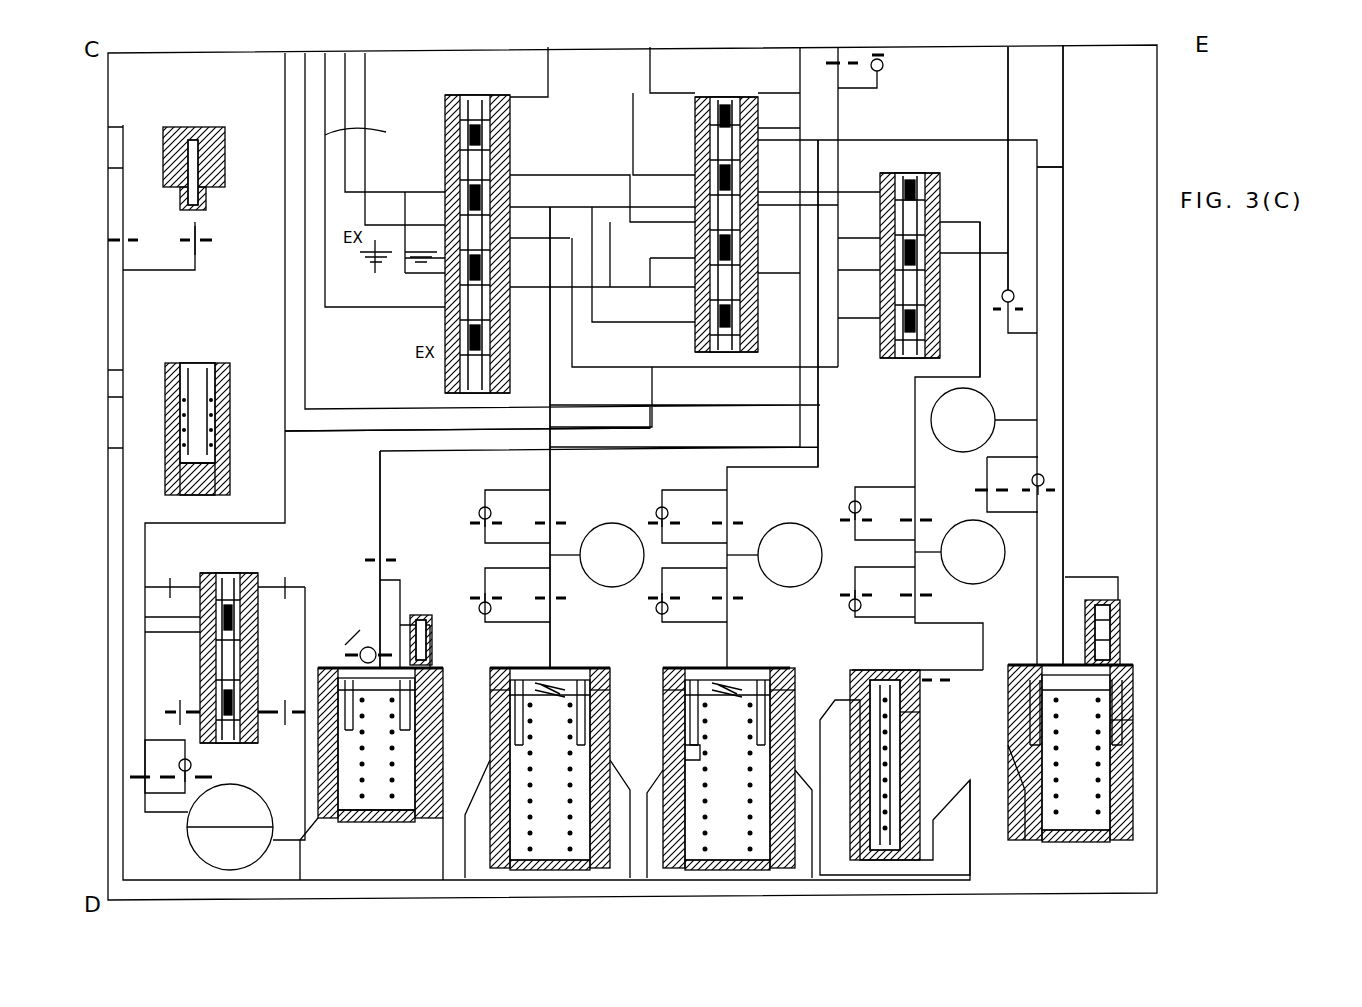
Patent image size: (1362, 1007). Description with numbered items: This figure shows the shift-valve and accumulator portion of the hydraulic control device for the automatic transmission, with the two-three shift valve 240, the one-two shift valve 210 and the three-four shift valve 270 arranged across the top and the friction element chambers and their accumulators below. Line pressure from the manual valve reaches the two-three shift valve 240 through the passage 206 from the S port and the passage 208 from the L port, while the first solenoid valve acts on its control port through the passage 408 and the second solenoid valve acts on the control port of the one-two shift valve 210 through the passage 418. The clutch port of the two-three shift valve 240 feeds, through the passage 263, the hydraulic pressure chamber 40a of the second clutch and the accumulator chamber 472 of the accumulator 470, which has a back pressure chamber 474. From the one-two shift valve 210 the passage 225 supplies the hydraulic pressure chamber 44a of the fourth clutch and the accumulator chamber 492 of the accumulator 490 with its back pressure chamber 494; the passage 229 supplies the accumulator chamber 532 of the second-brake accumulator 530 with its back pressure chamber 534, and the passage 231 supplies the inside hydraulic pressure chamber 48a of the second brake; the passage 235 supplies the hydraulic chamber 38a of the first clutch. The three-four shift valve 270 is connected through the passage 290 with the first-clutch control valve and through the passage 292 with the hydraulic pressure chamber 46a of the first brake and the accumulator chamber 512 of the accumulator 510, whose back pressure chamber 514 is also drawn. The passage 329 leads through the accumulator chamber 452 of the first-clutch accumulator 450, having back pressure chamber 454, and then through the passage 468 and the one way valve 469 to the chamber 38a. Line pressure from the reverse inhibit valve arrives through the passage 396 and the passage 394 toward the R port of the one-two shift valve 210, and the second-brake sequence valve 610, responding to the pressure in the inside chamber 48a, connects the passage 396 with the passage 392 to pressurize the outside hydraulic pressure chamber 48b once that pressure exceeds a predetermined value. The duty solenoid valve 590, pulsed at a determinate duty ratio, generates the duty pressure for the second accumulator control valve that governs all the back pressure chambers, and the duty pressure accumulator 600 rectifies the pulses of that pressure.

The duty solenoid valve 590 is at (213, 200).
The passage 396 is at (285, 348).
The duty pressure accumulator 600 is at (195, 505).
The B2 sequence valve 610 is at (270, 550).
The passage 392 is at (180, 647).
The accumulator 530 is at (345, 632).
The accumulator chamber 532 is at (443, 712).
The back pressure chamber 534 is at (412, 828).
The passage 231 is at (307, 840).
The inside hydraulic pressure chamber 48a is at (268, 848).
The outside hydraulic pressure chamber 48b is at (267, 823).
The passage 229 is at (382, 523).
The passage 394 is at (323, 433).
The 2-3 shift valve 240 is at (445, 386).
The passage 208 is at (345, 103).
The passage 206 is at (376, 132).
The passage 408 is at (548, 88).
The passage 418 is at (633, 123).
The 1-2 shift valve 210 is at (742, 356).
The passage 263 is at (552, 468).
The hydraulic pressure chamber 40a is at (609, 523).
The accumulator 470 is at (595, 666).
The accumulator chamber 472 is at (528, 668).
The back pressure chamber 474 is at (597, 716).
The accumulator chamber 492 is at (703, 680).
The accumulator 490 is at (768, 666).
The back pressure chamber 494 is at (825, 705).
The hydraulic pressure chamber 44a is at (790, 523).
The passage 225 is at (820, 449).
The 3-4 shift valve 270 is at (897, 366).
The passage 292 is at (980, 360).
The passage 290 is at (1008, 80).
The passage 329 is at (1063, 97).
The passage 235 is at (1063, 167).
The hydraulic chamber 38a is at (987, 407).
The one way valve 469 is at (1046, 483).
The passage 468 is at (1040, 549).
The hydraulic pressure chamber 46a is at (993, 573).
The accumulator 510 is at (930, 662).
The accumulator chamber 452 is at (920, 690).
The accumulator chamber 512 is at (905, 712).
The back pressure chamber 514 is at (838, 806).
The accumulator 450 is at (1085, 840).
The back pressure chamber 454 is at (1133, 720).